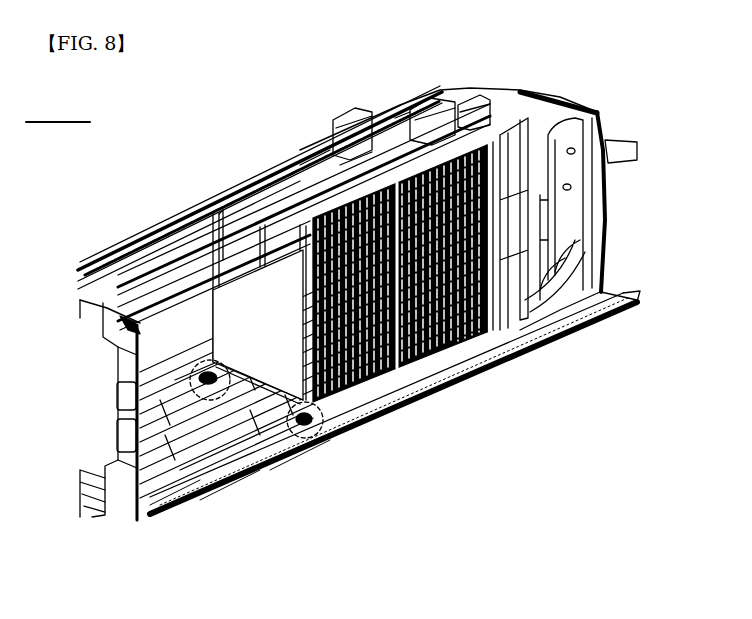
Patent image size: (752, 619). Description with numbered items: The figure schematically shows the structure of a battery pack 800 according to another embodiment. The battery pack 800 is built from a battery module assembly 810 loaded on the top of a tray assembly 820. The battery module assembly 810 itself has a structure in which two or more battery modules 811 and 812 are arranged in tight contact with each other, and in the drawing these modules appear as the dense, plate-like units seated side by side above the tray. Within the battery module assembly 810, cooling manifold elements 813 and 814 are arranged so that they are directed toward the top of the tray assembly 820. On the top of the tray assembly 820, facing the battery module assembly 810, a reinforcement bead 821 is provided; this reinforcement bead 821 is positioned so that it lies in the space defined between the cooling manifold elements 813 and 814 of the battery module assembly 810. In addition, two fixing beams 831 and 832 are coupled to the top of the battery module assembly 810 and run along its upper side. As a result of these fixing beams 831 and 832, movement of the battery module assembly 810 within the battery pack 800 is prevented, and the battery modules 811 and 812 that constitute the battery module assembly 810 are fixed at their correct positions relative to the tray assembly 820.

The battery pack 800 is at (311, 117).
The battery module assembly 810 is at (200, 243).
The battery module 811 is at (350, 387).
The battery module 812 is at (417, 362).
The cooling manifold element 813 is at (195, 365).
The cooling manifold element 814 is at (340, 445).
The tray assembly 820 is at (510, 368).
The reinforcement bead 821 is at (240, 430).
The fixing beam 831 is at (135, 243).
The fixing beam 832 is at (115, 252).